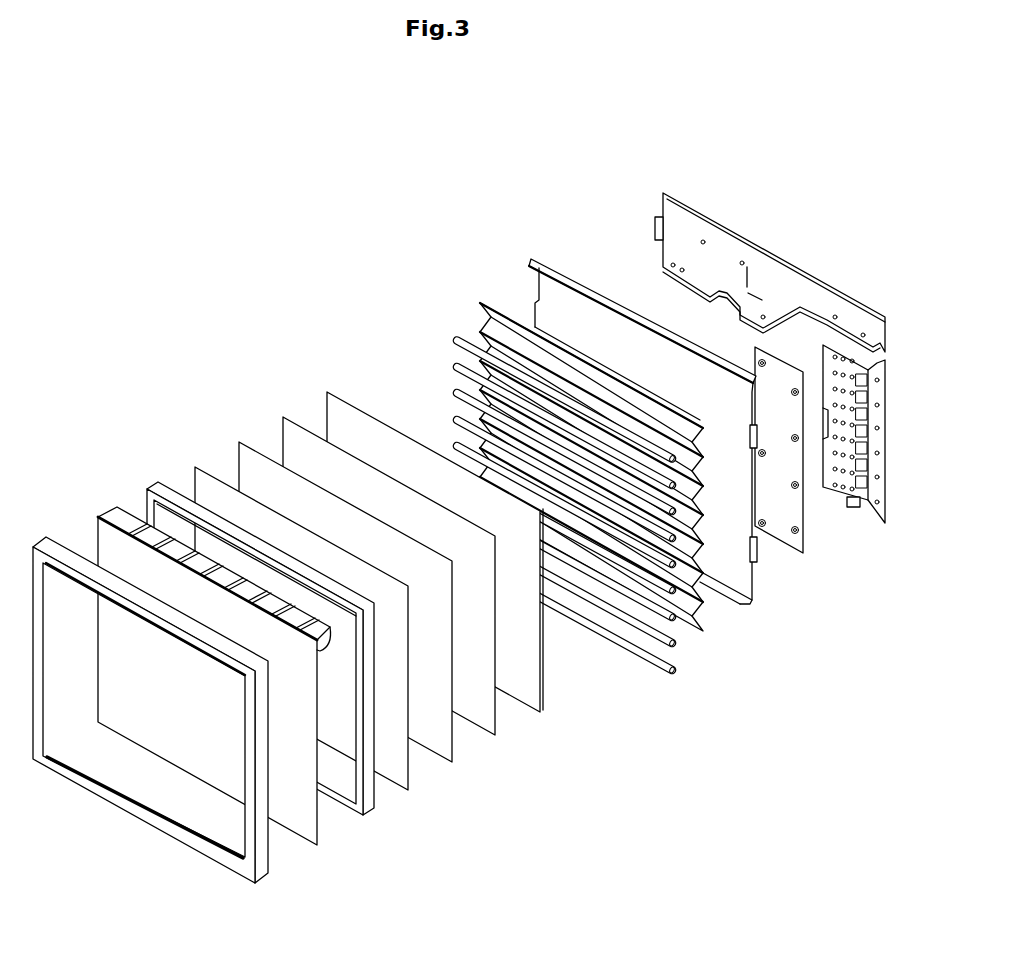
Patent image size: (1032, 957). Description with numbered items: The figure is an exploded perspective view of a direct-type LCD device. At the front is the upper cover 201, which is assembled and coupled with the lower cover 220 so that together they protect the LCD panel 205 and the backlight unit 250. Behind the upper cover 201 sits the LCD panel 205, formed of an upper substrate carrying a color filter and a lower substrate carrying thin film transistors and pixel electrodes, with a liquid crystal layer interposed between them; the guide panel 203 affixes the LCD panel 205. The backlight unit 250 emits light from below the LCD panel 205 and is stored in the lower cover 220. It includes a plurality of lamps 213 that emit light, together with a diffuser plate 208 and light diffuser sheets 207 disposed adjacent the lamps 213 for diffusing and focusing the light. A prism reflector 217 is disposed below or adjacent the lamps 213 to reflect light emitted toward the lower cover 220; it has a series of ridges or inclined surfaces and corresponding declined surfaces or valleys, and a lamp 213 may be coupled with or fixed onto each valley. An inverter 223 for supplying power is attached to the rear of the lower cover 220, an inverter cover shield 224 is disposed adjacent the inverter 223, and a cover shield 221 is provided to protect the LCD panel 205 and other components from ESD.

The upper cover 201 is at (50, 546).
The guide panel 203 is at (150, 488).
The LCD panel 205 is at (117, 507).
The light diffuser sheets 207 is at (283, 414).
The diffuser plate 208 is at (327, 392).
The lamps 213 is at (458, 336).
The prism reflector 217 is at (484, 302).
The lower cover 220 is at (541, 265).
The cover shield 221 is at (664, 192).
The inverter 223 is at (796, 553).
The inverter cover shield 224 is at (886, 524).
The backlight unit 250 is at (462, 205).